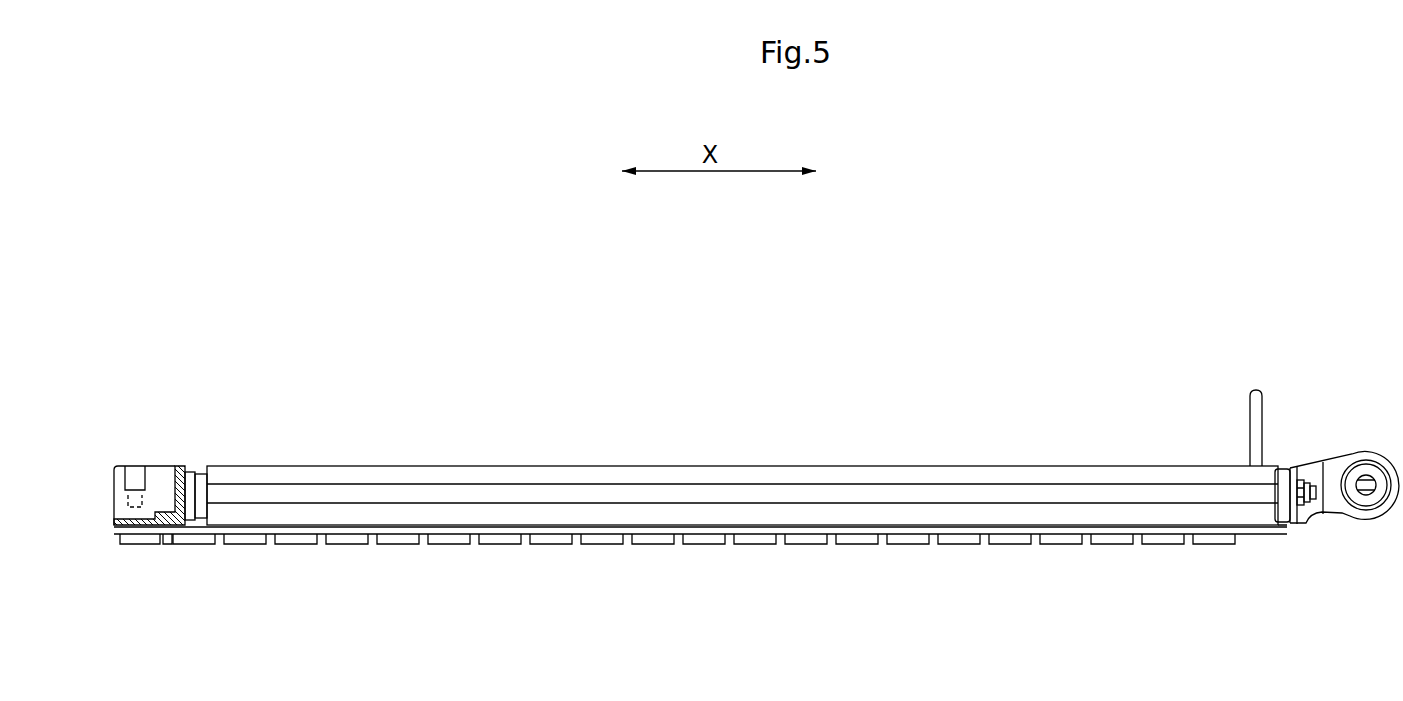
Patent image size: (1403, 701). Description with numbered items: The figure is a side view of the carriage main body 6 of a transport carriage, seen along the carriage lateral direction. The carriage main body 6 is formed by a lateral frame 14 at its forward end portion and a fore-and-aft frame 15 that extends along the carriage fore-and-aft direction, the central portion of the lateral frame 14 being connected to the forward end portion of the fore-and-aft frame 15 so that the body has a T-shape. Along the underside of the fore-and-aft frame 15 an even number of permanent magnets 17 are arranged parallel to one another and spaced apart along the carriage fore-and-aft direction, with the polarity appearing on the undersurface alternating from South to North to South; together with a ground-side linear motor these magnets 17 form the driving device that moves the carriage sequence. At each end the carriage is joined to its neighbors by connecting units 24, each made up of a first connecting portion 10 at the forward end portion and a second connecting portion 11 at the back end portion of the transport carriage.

The carriage main body 6 is at (836, 397).
The first connecting portion 10 is at (162, 473).
The second connecting portion 11 is at (1330, 462).
The lateral frame 14 is at (190, 468).
The fore-and-aft frame 15 is at (667, 467).
The magnets 17 is at (447, 545).
The connecting unit 24 is at (1370, 378).